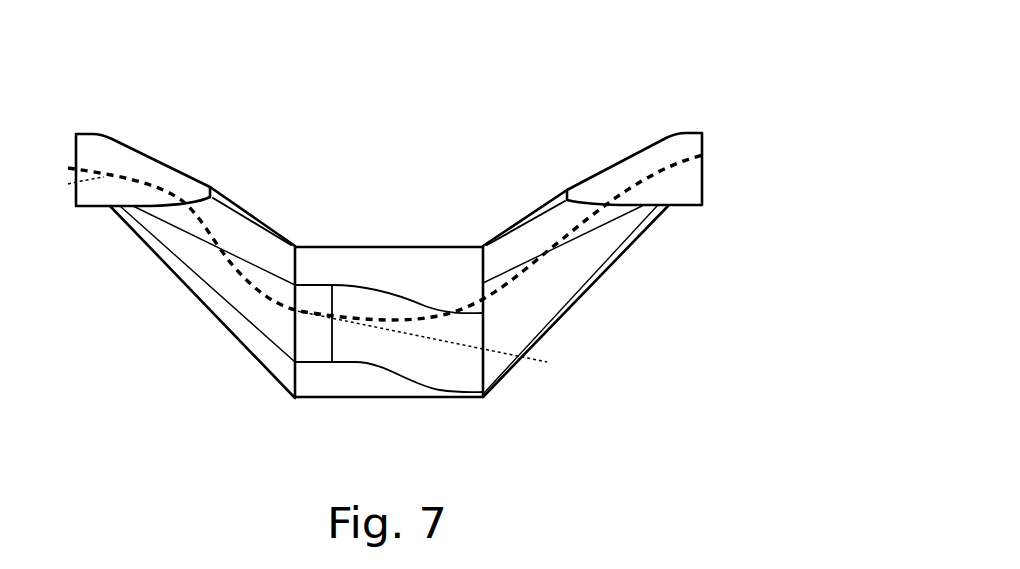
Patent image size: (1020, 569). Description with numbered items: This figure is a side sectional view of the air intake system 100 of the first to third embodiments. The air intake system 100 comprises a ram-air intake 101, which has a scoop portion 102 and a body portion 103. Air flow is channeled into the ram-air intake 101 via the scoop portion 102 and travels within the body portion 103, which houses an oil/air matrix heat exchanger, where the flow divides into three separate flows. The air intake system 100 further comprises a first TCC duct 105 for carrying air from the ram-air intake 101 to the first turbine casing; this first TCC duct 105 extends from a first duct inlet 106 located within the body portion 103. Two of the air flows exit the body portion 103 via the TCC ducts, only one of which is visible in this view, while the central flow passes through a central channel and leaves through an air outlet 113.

The air intake system 100 is at (665, 307).
The ram-air intake 101 is at (652, 114).
The scoop portion 102 is at (135, 138).
The body portion 103 is at (352, 247).
The first TCC duct 105 is at (418, 368).
The first duct inlet 106 is at (308, 352).
The air outlet 113 is at (704, 173).